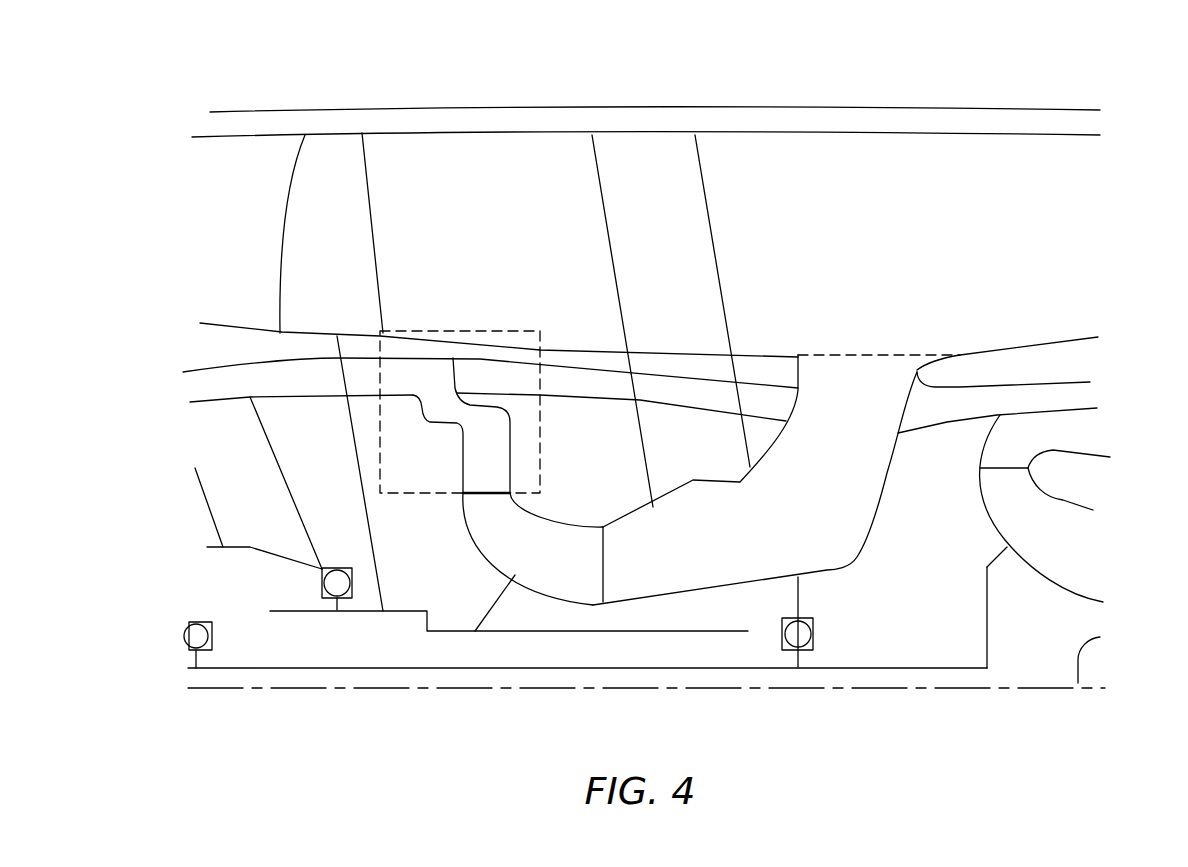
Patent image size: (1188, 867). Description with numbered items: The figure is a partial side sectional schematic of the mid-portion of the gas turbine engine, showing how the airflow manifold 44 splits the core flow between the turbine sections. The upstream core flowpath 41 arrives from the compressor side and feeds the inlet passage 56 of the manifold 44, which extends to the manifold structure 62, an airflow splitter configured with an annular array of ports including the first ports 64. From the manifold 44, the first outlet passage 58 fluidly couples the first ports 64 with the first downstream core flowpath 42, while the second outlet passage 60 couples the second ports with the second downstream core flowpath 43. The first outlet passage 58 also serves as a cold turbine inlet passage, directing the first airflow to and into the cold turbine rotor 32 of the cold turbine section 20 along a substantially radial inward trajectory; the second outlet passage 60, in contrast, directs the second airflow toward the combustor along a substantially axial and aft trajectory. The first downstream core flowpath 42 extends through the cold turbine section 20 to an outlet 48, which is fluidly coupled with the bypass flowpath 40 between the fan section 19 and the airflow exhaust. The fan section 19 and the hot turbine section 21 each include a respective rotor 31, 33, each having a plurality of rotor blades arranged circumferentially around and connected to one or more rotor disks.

The fan section 19 is at (343, 113).
The bypass flowpath 40 is at (850, 229).
The outlet 48 is at (905, 355).
The airflow manifold 44 is at (483, 318).
The inlet passage 56 is at (402, 372).
The first ports 64 is at (427, 378).
The second outlet passage 60 is at (517, 370).
The second downstream core flowpath 43 is at (644, 378).
The upstream core flowpath 41 is at (194, 390).
The manifold structure 62 is at (415, 411).
The first outlet passage 58 is at (497, 452).
The rotor 31 is at (367, 522).
The first downstream core flowpath 42 is at (777, 522).
The hot turbine section 21 is at (1094, 545).
The cold turbine section 20 is at (478, 576).
The cold turbine rotor 32 is at (543, 590).
The rotor 33 is at (987, 617).